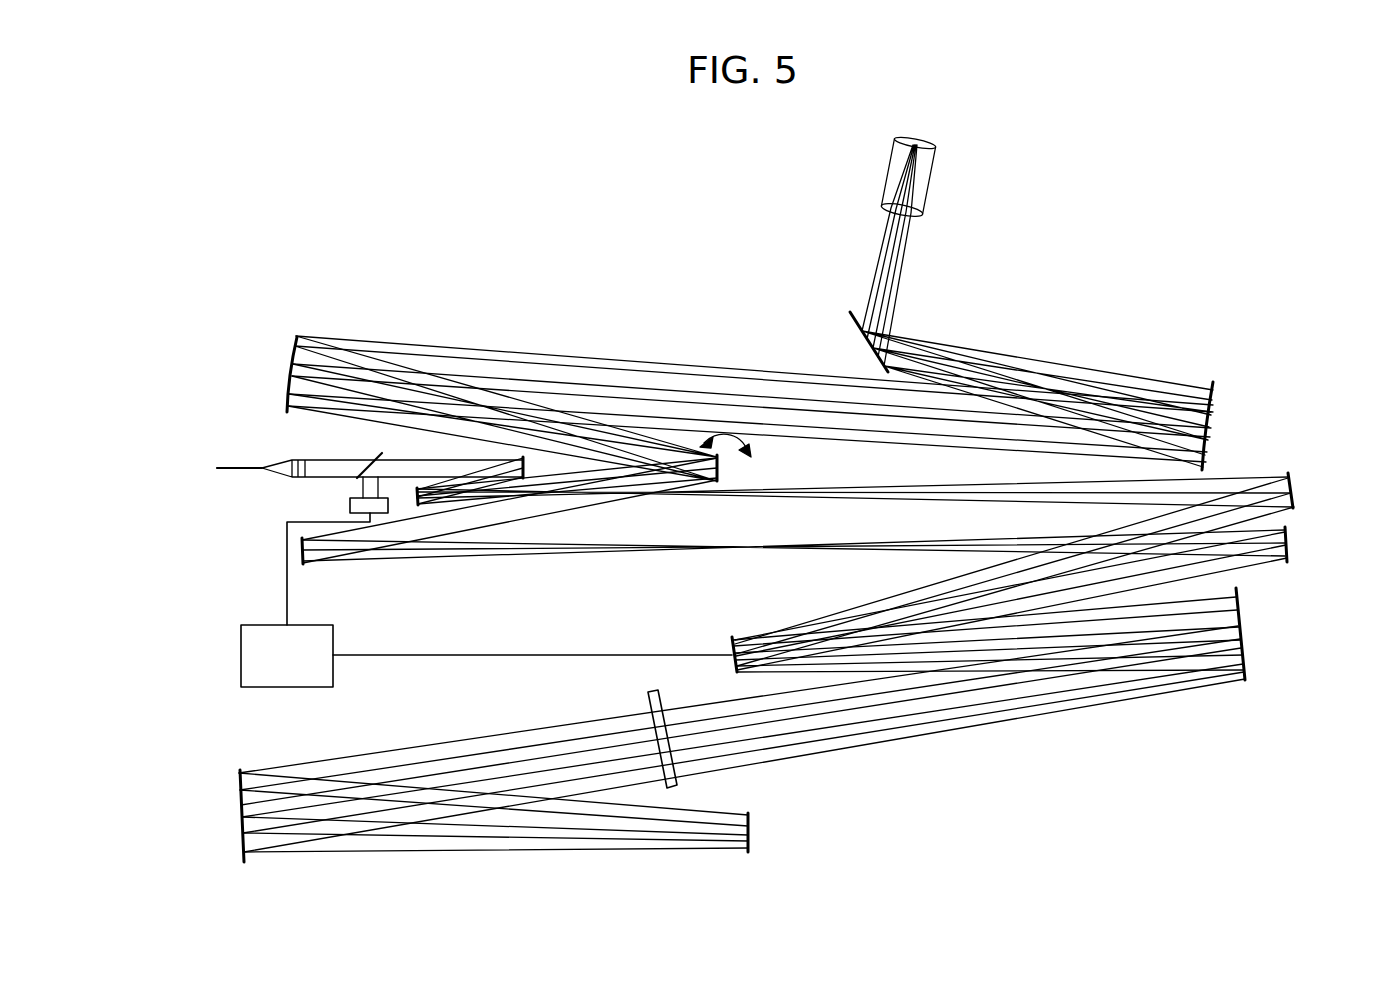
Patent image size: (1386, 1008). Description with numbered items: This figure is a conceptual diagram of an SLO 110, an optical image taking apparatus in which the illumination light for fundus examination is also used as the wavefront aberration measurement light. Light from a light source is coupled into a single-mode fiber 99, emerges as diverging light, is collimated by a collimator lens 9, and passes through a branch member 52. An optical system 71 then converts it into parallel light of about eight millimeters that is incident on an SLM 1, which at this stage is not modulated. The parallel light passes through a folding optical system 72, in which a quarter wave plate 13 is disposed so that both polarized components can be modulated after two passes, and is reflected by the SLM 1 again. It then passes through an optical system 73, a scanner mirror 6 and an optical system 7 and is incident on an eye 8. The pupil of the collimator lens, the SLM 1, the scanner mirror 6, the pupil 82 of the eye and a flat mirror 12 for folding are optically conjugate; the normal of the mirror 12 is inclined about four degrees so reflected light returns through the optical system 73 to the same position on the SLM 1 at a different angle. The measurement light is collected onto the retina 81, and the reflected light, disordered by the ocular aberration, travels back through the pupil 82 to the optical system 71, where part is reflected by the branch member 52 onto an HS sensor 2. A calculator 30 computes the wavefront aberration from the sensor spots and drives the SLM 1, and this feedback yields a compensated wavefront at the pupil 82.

The SLO 110 is at (545, 238).
The SLM 1 is at (730, 647).
The HS sensor 2 is at (352, 505).
The scanner mirror 6 is at (719, 478).
The optical system 7 is at (292, 362).
The eye 8 is at (1016, 301).
The retina 81 is at (928, 163).
The pupil 82 is at (915, 224).
The collimator lens 9 is at (293, 462).
The single-mode fiber 99 is at (238, 467).
The flat mirror 12 is at (752, 826).
The quarter wave plate 13 is at (672, 775).
The calculator 30 is at (307, 628).
The branch member 52 is at (381, 455).
The optical system 71 is at (1296, 487).
The optical system 72 is at (1242, 625).
The optical system 73 is at (300, 548).